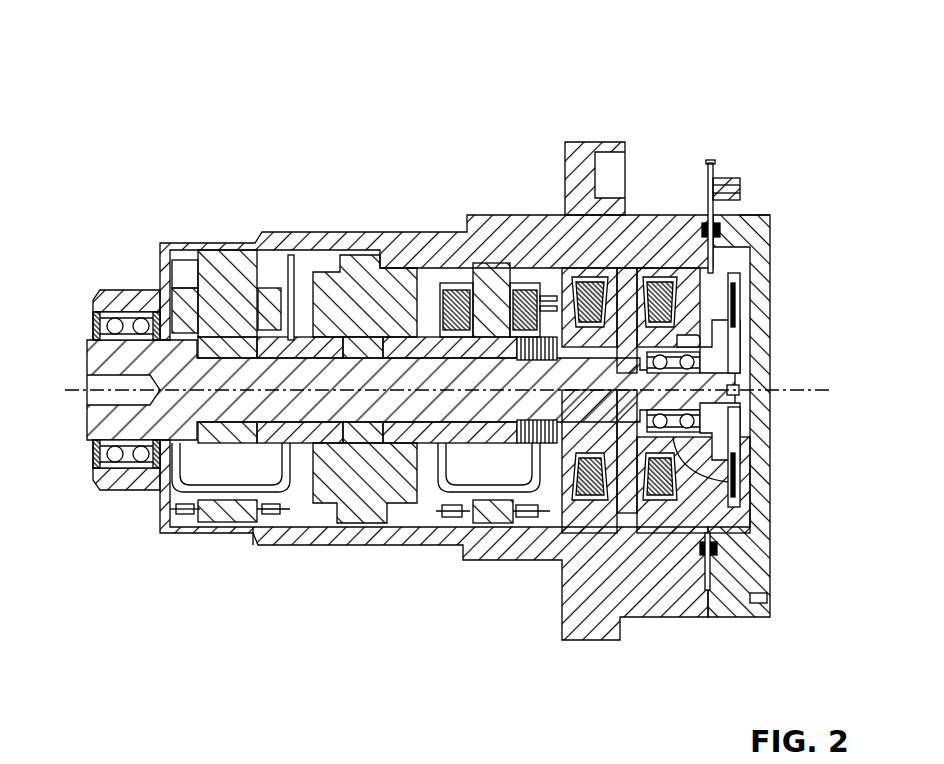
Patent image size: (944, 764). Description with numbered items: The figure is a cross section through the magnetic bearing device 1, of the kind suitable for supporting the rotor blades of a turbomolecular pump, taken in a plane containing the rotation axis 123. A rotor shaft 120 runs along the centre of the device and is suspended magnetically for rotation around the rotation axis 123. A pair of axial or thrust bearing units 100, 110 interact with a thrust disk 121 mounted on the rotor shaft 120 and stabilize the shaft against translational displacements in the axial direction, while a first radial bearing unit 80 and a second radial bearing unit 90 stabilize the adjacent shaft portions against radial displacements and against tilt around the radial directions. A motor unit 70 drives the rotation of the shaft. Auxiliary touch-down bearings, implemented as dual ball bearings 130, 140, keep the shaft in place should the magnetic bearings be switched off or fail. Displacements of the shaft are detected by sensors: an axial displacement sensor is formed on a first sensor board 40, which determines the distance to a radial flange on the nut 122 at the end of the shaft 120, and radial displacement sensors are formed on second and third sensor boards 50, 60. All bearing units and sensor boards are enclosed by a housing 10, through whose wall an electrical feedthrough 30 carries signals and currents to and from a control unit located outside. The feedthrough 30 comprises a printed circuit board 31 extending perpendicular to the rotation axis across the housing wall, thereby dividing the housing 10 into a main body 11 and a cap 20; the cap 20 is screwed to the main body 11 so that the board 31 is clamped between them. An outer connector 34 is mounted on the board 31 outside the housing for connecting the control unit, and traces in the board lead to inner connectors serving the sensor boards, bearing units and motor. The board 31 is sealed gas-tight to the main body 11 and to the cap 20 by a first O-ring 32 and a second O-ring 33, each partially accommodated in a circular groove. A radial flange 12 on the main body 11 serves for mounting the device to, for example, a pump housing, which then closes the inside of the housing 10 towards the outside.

The motor 1 is at (96, 101).
The housing 10 is at (378, 575).
The main body 11 is at (292, 547).
The radial flange 12 is at (585, 148).
The cap 20 is at (755, 237).
The electrical feedthrough 30 is at (720, 118).
The printed circuit board 31 is at (707, 215).
The first O-ring 32 is at (702, 228).
The second O-ring 33 is at (770, 212).
The outer connector 34 is at (740, 180).
The first sensor board 40 is at (740, 297).
The second sensor board 50 is at (540, 285).
The third sensor board 60 is at (287, 267).
The motor unit 70 is at (367, 283).
The first radial bearing unit 80 is at (470, 300).
The second radial bearing unit 90 is at (240, 283).
The axial bearing unit 100 is at (553, 562).
The axial bearing unit 110 is at (657, 525).
The rotor shaft 120 is at (97, 357).
The thrust disk 121 is at (593, 502).
The nut 122 is at (740, 343).
The rotation axis 123 is at (70, 392).
The dual ball bearing 130 is at (738, 492).
The dual ball bearing 140 is at (140, 470).